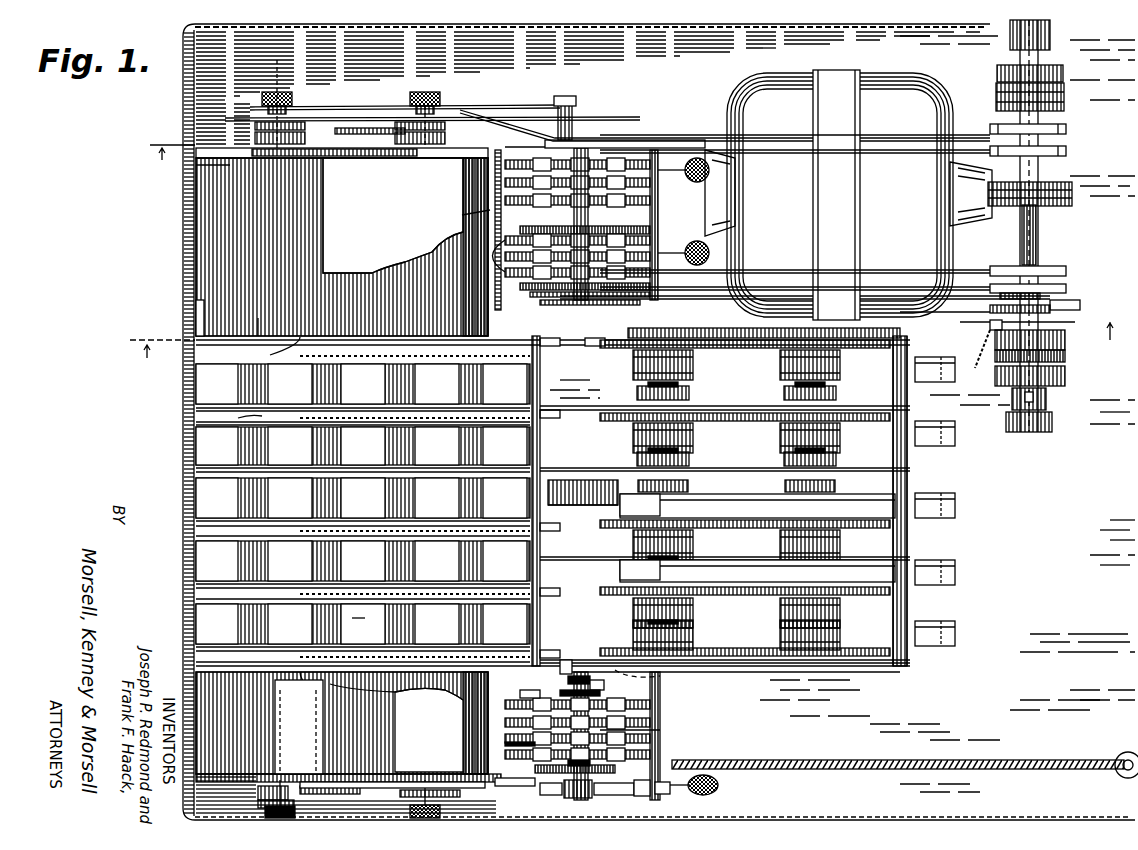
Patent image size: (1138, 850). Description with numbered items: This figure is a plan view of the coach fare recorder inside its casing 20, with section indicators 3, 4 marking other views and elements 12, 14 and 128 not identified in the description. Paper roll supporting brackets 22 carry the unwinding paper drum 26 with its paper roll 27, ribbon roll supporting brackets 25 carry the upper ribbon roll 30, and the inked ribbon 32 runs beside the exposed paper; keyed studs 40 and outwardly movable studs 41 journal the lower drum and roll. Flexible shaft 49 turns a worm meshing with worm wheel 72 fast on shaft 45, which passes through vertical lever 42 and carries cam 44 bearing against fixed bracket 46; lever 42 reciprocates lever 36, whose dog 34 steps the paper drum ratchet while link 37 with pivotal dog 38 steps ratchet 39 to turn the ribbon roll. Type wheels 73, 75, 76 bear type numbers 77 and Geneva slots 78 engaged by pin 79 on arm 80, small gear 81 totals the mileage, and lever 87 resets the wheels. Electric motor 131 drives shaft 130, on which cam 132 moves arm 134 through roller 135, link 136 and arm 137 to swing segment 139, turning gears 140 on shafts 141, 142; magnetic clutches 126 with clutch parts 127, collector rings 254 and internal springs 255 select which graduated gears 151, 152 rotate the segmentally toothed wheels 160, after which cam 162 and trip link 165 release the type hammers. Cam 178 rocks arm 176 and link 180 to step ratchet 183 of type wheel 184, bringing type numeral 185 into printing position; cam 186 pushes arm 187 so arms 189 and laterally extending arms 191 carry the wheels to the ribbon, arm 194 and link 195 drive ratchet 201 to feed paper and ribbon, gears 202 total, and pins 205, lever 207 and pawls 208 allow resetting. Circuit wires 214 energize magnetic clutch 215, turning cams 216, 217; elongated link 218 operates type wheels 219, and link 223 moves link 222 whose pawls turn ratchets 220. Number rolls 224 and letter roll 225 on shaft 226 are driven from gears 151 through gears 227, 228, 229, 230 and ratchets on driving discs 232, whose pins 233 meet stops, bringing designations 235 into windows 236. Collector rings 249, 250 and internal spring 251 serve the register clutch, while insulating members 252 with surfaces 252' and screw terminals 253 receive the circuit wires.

The section line 3 is at (622, 332).
The section line 4 is at (172, 145).
The shaft 12 is at (295, 196).
The plate 14 is at (608, 720).
The type drum 20 is at (196, 255).
The plate 22 is at (322, 152).
The bearing plate 25 is at (318, 131).
The drum end 26 is at (196, 165).
The drum wall 27 is at (196, 302).
The cut-away of drum 30 is at (490, 212).
The frame post 32 is at (496, 310).
The bracket 34 is at (276, 786).
The plate 36 is at (495, 802).
The bar 37 is at (362, 790).
The bar 38 is at (318, 793).
The bar 39 is at (455, 793).
The bracket 40 is at (265, 806).
The knob 41 is at (440, 100).
The block 42 is at (615, 796).
The block 44 is at (550, 796).
The bearing 45 is at (578, 798).
The block 46 is at (650, 796).
The worm shaft 49 is at (835, 760).
The rack 72 is at (535, 770).
The pin 73 is at (533, 685).
The lever 75 is at (660, 730).
The bar 76 is at (505, 744).
The gear wheels 77 is at (532, 713).
The pinion 78 is at (530, 698).
The pin 79 is at (600, 682).
The plate 80 is at (600, 660).
The post 81 is at (575, 648).
The knob 87 is at (712, 792).
The gear 126 is at (633, 368).
The pinion 127 is at (637, 395).
The gear 128 is at (1065, 374).
The shaft 130 is at (1040, 250).
The housing 131 is at (905, 75).
The collar 132 is at (990, 312).
The collar 134 is at (1080, 305).
The rod 135 is at (1031, 320).
The rod 136 is at (952, 312).
The rod 137 is at (676, 305).
The rack 139 is at (690, 328).
The knob/lever 140 is at (292, 98).
The link 141 is at (665, 677).
The block 142 is at (808, 508).
The shaft 151 is at (700, 360).
The rail 152 is at (845, 357).
The rack 160 is at (625, 352).
The lug 162 is at (952, 340).
The pawl 165 is at (972, 349).
The rod 176 is at (990, 262).
The collar 178 is at (1066, 269).
The rod 180 is at (912, 270).
The plate 183 is at (548, 284).
The yoke 184 is at (505, 240).
The plate 185 is at (555, 296).
The collar 186 is at (1066, 288).
The pin 187 is at (1000, 290).
The gear 189 is at (535, 240).
The bar 191 is at (595, 228).
The plate 194 is at (618, 142).
The post 195 is at (551, 118).
The plate 201 is at (402, 130).
The gear 202 is at (565, 240).
The bearing 205 is at (255, 134).
The cone 207 is at (698, 262).
The ball 208 is at (660, 236).
The spring 214 is at (1060, 96).
The gear 215 is at (1060, 86).
The collar rod 216 is at (1066, 152).
The collar 217 is at (1066, 130).
The band 218 is at (828, 158).
The gear stack 219 is at (505, 166).
The rod 220 is at (200, 111).
The lever 222 is at (545, 100).
The rod 223 is at (802, 128).
The register wheel 224 is at (196, 443).
The register wheel 225 is at (200, 375).
The numeral 226 is at (352, 617).
The lug 227 is at (593, 490).
The bar 228 is at (542, 430).
The drum 229 is at (400, 672).
The line 230 is at (315, 357).
The strip 232 is at (270, 355).
The pin 233 is at (276, 319).
The numeral 235 is at (361, 509).
The partition 236 is at (190, 404).
The gear 249 is at (1065, 352).
The gear 250 is at (1065, 334).
The knob 251 is at (1046, 388).
The block 252 is at (945, 501).
The bar 252' is at (816, 522).
The pinion 253 is at (700, 490).
The gear 254 is at (633, 436).
The key 255 is at (670, 378).